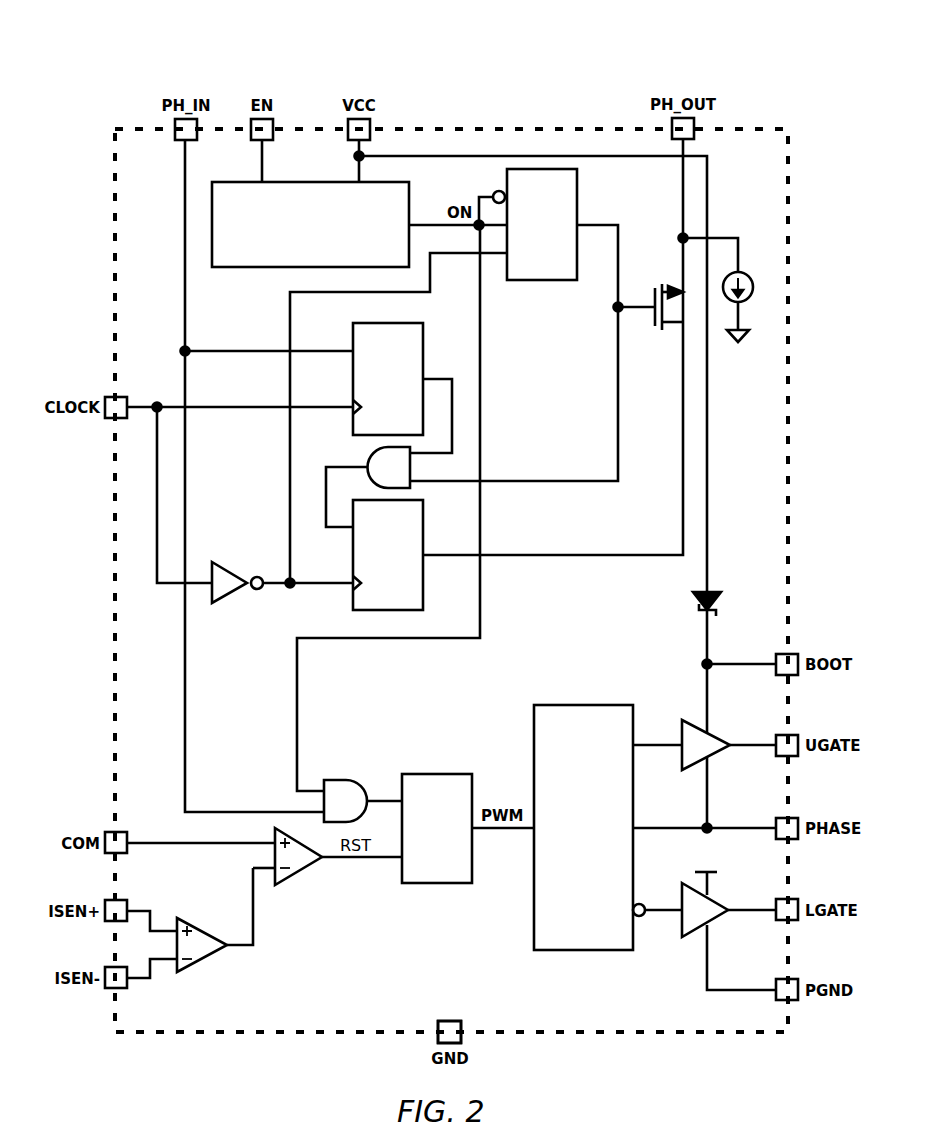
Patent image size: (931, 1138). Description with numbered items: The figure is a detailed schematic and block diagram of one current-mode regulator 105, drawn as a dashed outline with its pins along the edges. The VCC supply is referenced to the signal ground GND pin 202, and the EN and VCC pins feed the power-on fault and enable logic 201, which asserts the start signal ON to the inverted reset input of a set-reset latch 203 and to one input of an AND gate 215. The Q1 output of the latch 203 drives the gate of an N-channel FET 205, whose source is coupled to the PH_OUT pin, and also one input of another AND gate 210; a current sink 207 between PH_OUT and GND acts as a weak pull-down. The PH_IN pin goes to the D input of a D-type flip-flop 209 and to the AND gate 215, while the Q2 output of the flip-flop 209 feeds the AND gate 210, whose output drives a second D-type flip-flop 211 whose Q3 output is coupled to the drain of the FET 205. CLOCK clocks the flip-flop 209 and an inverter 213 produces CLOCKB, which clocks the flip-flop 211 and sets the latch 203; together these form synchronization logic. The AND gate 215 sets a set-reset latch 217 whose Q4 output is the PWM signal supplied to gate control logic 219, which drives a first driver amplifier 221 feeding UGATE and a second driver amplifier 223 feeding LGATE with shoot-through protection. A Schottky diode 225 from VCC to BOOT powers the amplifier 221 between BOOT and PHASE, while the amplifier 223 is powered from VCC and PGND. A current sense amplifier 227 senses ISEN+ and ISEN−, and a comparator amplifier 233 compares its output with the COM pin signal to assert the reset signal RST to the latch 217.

The current-mode regulator 105 is at (602, 56).
The power-on fault and enable logic 201 is at (282, 268).
The signal ground GND pin 202 is at (440, 1021).
The latch 203 is at (503, 190).
The N-channel FET 205 is at (656, 286).
The current sink 207 is at (752, 287).
The D-type flip-flop 209 is at (371, 322).
The AND gate 210 is at (412, 471).
The D-type flip-flop 211 is at (353, 555).
The inverter 213 is at (215, 603).
The AND gate 215 is at (345, 781).
The set-reset latch 217 is at (455, 884).
The gate control logic 219 is at (575, 950).
The first driver amplifier 221 is at (682, 720).
The second driver amplifier 223 is at (690, 921).
The Schottky diode 225 is at (707, 586).
The current sense amplifier 227 is at (203, 924).
The comparator amplifier 233 is at (287, 878).